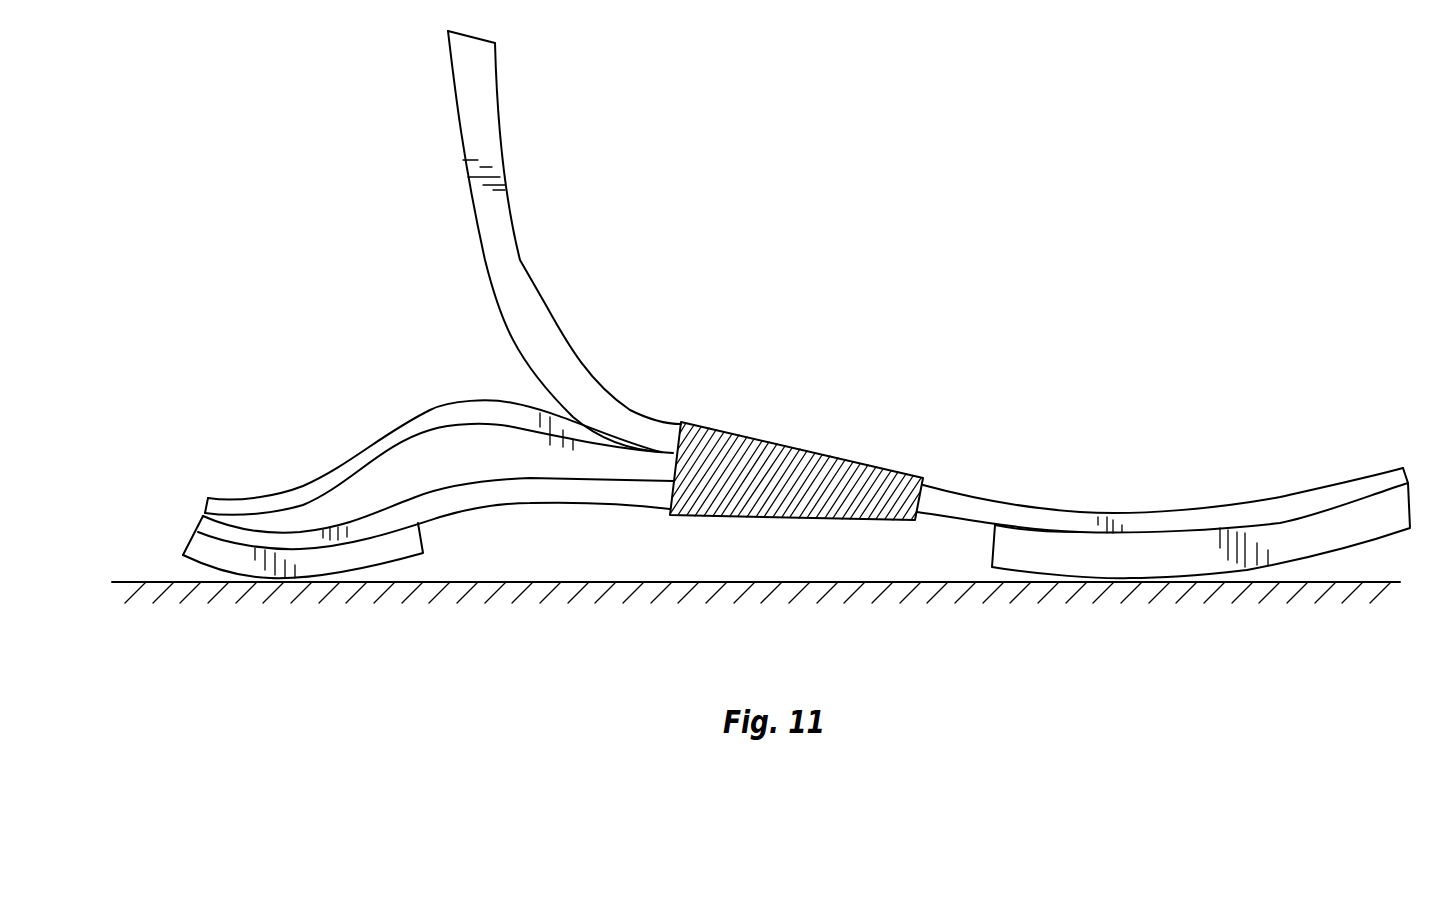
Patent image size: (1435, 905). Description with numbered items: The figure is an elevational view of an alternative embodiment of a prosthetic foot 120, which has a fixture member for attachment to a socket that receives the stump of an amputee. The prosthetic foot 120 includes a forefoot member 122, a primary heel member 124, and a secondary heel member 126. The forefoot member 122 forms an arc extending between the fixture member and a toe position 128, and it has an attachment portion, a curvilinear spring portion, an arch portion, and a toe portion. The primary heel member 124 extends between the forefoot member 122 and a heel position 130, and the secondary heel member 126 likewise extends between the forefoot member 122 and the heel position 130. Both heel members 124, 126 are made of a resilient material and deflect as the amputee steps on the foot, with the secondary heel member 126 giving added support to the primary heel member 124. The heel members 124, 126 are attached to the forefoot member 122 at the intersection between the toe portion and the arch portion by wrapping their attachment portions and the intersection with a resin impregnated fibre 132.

The prosthetic foot 120 is at (925, 332).
The forefoot member 122 is at (567, 378).
The heel member 124 is at (508, 497).
The secondary heel member 126 is at (437, 417).
The toe position 128 is at (1400, 467).
The heel position 130 is at (198, 515).
The resin impregnated fibre 132 is at (783, 445).